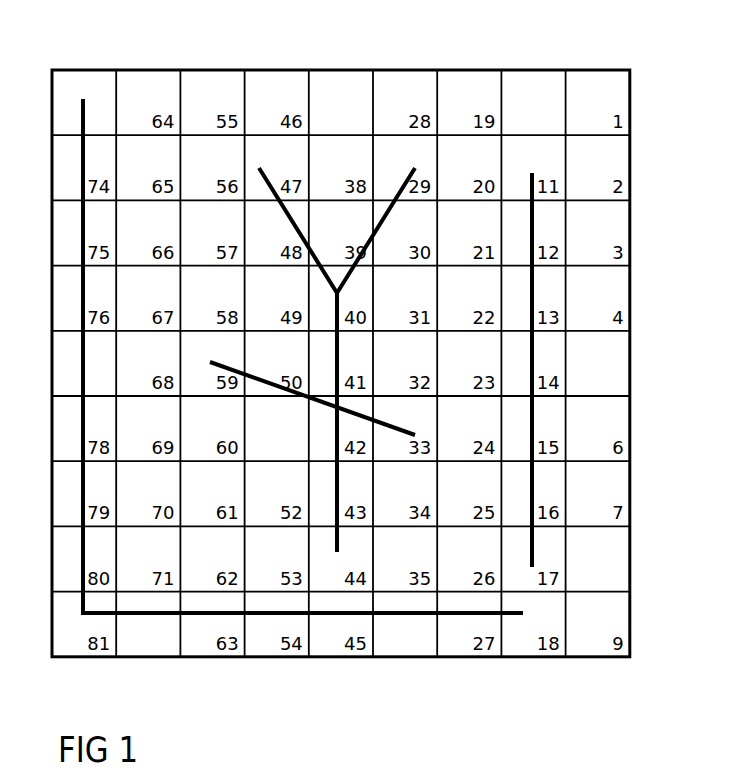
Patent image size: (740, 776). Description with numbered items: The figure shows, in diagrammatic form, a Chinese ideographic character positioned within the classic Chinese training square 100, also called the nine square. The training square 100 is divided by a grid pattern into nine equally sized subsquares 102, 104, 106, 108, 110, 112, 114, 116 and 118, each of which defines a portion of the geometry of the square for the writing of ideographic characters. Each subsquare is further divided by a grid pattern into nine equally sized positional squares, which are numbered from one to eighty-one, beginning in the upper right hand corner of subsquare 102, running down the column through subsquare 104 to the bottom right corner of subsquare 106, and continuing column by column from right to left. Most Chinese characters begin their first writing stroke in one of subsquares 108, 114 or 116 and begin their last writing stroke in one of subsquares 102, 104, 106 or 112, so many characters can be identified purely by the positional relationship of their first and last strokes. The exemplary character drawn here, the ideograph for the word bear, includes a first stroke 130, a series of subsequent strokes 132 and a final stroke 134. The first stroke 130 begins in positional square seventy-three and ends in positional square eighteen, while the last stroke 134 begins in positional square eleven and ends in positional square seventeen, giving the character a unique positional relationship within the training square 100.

The Chinese training square 100 is at (231, 60).
The subsquare 102 is at (549, 84).
The subsquare 104 is at (620, 368).
The subsquare 106 is at (621, 559).
The subsquare 108 is at (349, 84).
The subsquare 110 is at (266, 449).
The subsquare 112 is at (393, 641).
The subsquare 114 is at (73, 83).
The subsquare 116 is at (60, 365).
The subsquare 118 is at (143, 639).
The first stroke 130 is at (82, 233).
The series of subsequent strokes 132 is at (259, 168).
The final stroke 134 is at (533, 243).